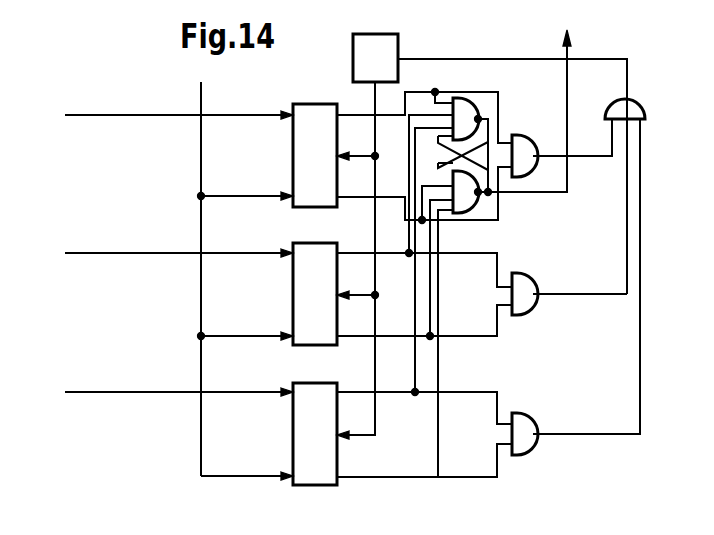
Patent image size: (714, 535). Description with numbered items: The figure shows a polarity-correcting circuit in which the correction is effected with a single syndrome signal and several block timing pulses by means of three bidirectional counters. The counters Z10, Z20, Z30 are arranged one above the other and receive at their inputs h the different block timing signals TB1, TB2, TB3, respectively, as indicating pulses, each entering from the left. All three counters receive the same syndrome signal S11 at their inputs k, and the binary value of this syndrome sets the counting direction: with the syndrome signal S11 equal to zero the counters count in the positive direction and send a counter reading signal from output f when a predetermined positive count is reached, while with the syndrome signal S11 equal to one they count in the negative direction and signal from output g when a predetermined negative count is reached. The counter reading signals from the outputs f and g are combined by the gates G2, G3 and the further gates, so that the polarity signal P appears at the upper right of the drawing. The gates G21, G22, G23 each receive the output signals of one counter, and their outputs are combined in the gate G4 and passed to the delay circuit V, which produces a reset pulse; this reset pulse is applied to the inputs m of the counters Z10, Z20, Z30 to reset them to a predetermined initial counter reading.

The syndrome signal S11 is at (198, 264).
The block timing pulse TB1 is at (161, 116).
The block timing signal TB2 is at (161, 254).
The block timing signal TB3 is at (161, 393).
The counter Z10 is at (321, 151).
The counter Z20 is at (321, 294).
The counter Z30 is at (321, 432).
The delay circuit V is at (482, 236).
The gate G2 is at (466, 97).
The gate G3 is at (466, 214).
The gate G21 is at (517, 138).
The gate G22 is at (522, 276).
The gate G23 is at (522, 417).
The gate G4 is at (643, 112).
The polarity signal P is at (537, 106).